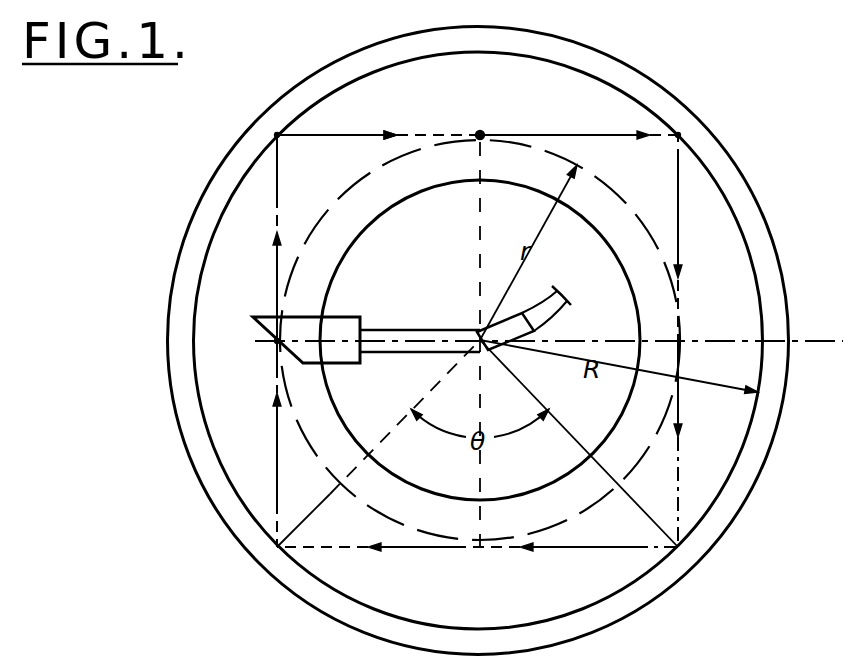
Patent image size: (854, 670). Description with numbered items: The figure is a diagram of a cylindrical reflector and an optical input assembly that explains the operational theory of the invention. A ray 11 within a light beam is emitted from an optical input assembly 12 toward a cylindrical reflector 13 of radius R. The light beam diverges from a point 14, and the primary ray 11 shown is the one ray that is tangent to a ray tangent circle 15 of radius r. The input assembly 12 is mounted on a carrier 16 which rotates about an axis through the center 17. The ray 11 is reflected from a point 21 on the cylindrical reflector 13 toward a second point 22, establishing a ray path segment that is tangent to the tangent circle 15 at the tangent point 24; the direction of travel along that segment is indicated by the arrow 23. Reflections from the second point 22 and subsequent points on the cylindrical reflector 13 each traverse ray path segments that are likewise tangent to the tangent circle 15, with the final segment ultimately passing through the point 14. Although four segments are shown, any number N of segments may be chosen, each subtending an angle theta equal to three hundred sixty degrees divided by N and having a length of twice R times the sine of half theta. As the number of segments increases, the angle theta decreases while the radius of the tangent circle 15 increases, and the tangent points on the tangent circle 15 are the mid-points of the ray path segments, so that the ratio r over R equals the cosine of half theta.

The ray 11 is at (278, 197).
The optical input assembly 12 is at (336, 317).
The cylindrical reflector 13 is at (576, 68).
The point 14 is at (277, 341).
The ray tangent circle 15 is at (290, 424).
The carrier 16 is at (494, 230).
The center 17 is at (480, 336).
The point 21 is at (277, 135).
The second point 22 is at (678, 135).
The direction arrow 23 is at (358, 135).
The tangent point 24 is at (481, 134).